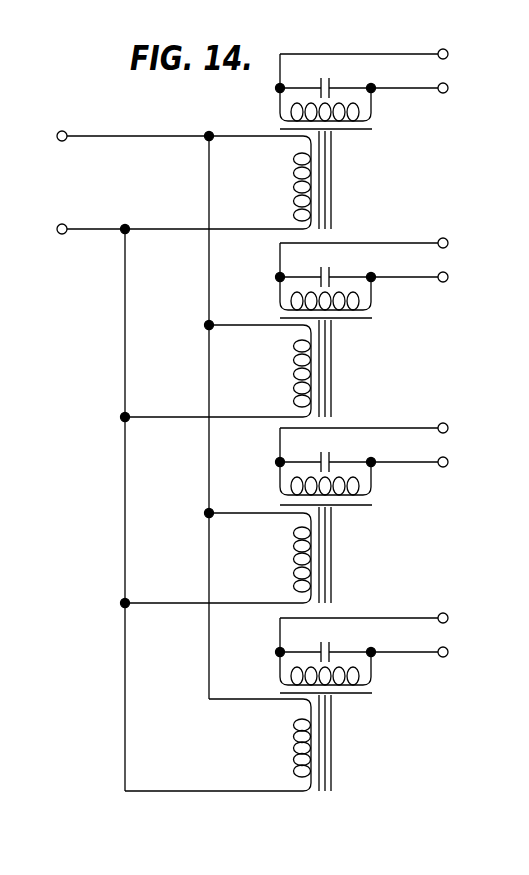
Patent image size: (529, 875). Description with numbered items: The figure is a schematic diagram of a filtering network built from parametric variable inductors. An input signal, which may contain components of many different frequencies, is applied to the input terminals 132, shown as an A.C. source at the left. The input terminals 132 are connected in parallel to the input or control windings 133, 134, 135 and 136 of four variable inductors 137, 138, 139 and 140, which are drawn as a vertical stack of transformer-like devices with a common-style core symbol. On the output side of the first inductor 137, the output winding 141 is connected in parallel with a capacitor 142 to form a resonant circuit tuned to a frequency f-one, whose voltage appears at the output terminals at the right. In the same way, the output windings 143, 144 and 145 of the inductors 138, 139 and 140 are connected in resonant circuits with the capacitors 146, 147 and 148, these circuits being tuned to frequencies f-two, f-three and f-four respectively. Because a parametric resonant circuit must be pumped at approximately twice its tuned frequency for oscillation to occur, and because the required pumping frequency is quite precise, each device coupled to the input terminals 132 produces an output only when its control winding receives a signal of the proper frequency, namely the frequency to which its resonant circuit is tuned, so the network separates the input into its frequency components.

The input terminals 132 is at (60, 223).
The input winding 133 is at (292, 184).
The input winding 134 is at (292, 373).
The input winding 135 is at (292, 558).
The input winding 136 is at (293, 745).
The variable inductor 137 is at (357, 153).
The variable inductor 138 is at (362, 333).
The variable inductor 139 is at (362, 526).
The variable inductor 140 is at (362, 705).
The output winding 141 is at (373, 117).
The capacitor 142 is at (330, 80).
The output winding 143 is at (373, 303).
The output winding 144 is at (372, 489).
The output winding 145 is at (372, 678).
The capacitor 146 is at (330, 272).
The capacitor 147 is at (330, 458).
The capacitor 148 is at (330, 648).